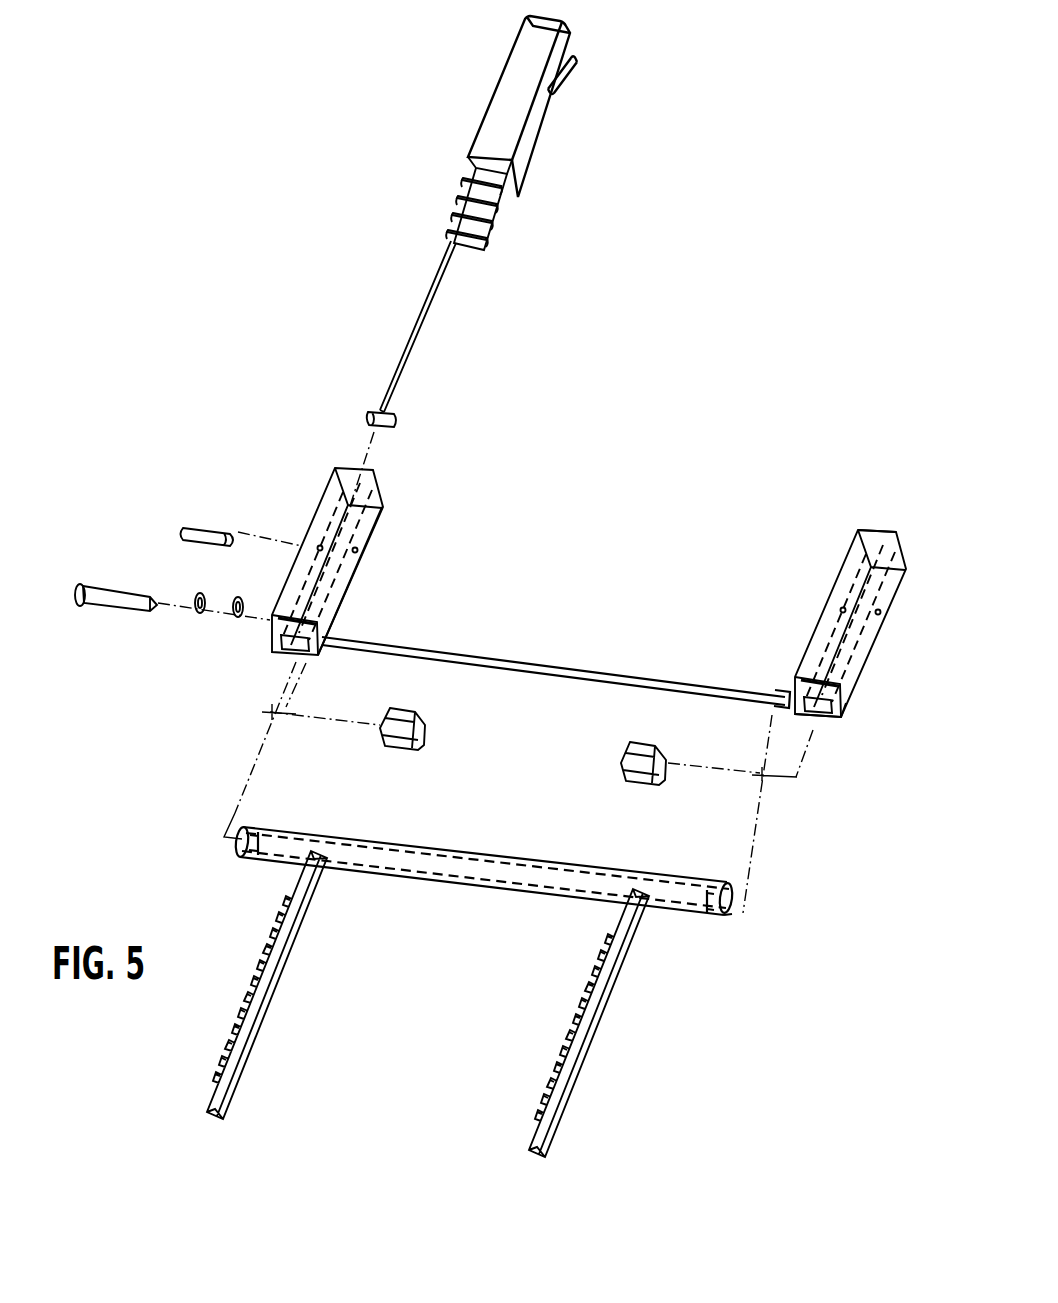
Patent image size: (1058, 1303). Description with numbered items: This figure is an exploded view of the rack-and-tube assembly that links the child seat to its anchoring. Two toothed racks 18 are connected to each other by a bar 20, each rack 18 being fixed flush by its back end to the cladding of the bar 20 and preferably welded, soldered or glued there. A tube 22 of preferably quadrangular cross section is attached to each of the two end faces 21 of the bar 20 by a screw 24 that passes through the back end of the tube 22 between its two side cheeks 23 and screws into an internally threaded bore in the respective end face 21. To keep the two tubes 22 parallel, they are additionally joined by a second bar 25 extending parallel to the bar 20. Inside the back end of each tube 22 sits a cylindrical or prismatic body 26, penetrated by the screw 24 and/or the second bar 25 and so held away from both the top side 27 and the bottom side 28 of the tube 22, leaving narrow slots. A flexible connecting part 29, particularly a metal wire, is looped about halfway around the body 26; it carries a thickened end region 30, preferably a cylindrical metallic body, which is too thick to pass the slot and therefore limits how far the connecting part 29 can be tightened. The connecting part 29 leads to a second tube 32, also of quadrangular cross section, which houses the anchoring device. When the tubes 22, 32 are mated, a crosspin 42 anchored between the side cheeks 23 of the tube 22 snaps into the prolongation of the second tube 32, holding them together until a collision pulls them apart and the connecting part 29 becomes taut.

The toothed rack 18 is at (240, 1083).
The bar 20 is at (456, 870).
The end face 21 is at (741, 898).
The tube 22 is at (385, 528).
The side cheek 23 is at (383, 497).
The screw 24 is at (113, 600).
The second bar 25 is at (585, 673).
The cylindrical and/or prismatic body 26 is at (427, 733).
The top side 27 is at (878, 530).
The bottom side 28 is at (827, 742).
The connecting part 29 is at (432, 305).
The thickened end region 30 is at (400, 422).
The second tube 32 is at (510, 90).
The crosspin 42 is at (208, 524).